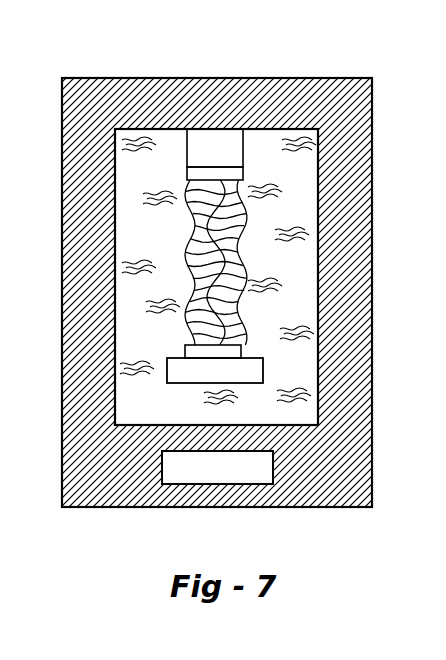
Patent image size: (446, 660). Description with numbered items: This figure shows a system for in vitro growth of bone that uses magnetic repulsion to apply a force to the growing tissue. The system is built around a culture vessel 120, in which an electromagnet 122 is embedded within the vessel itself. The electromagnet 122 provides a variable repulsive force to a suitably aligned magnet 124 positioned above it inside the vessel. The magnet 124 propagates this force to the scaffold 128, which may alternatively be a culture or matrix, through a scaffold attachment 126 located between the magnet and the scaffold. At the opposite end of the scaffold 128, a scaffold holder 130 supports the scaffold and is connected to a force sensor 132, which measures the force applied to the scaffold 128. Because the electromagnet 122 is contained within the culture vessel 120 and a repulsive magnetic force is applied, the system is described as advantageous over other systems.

The culture vessel 120 is at (343, 86).
The electromagnet 122 is at (217, 467).
The magnet 124 is at (190, 377).
The scaffold attachment 126 is at (190, 348).
The scaffold 128 is at (192, 255).
The scaffold holder 130 is at (193, 175).
The force sensor 132 is at (215, 148).